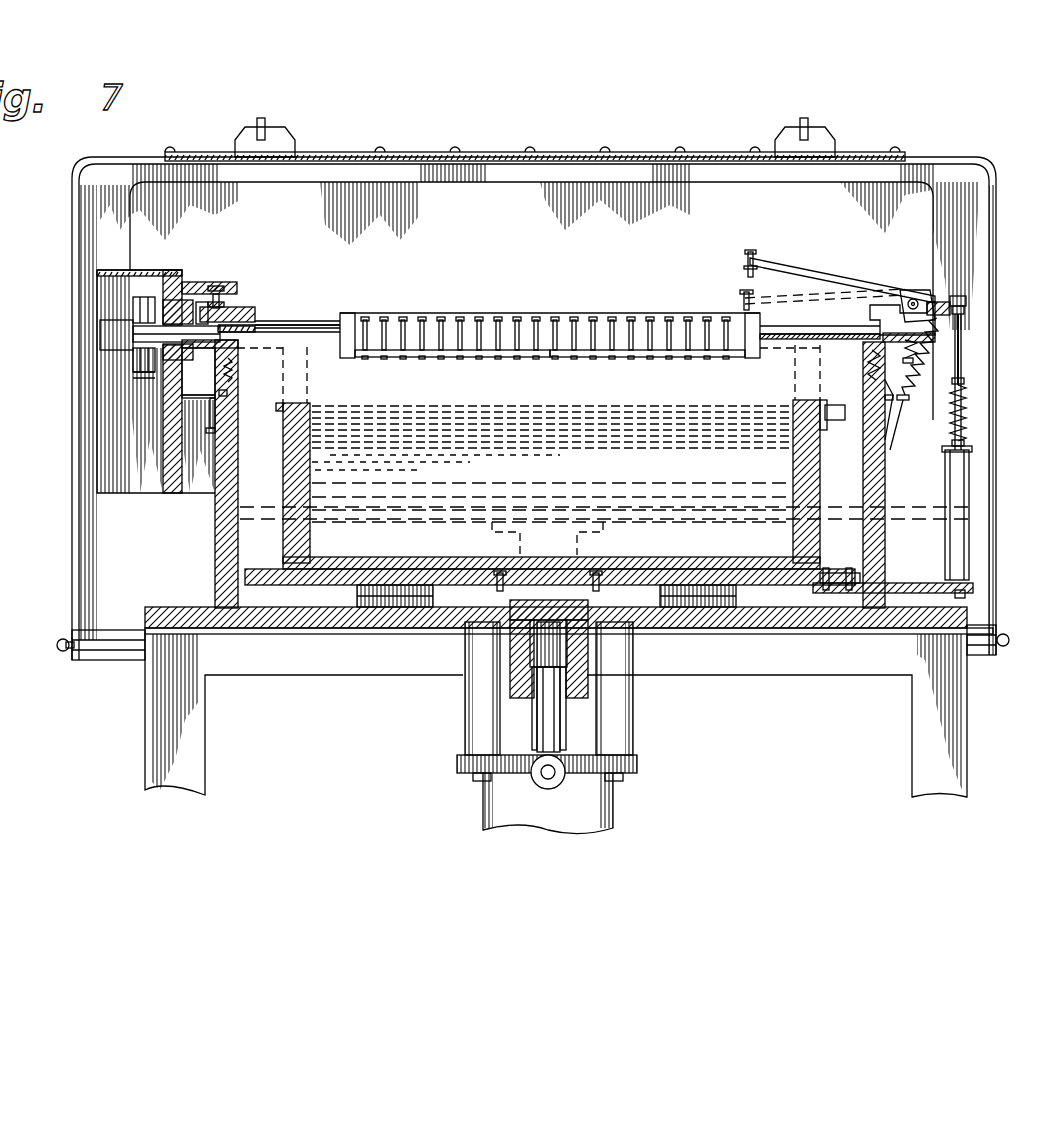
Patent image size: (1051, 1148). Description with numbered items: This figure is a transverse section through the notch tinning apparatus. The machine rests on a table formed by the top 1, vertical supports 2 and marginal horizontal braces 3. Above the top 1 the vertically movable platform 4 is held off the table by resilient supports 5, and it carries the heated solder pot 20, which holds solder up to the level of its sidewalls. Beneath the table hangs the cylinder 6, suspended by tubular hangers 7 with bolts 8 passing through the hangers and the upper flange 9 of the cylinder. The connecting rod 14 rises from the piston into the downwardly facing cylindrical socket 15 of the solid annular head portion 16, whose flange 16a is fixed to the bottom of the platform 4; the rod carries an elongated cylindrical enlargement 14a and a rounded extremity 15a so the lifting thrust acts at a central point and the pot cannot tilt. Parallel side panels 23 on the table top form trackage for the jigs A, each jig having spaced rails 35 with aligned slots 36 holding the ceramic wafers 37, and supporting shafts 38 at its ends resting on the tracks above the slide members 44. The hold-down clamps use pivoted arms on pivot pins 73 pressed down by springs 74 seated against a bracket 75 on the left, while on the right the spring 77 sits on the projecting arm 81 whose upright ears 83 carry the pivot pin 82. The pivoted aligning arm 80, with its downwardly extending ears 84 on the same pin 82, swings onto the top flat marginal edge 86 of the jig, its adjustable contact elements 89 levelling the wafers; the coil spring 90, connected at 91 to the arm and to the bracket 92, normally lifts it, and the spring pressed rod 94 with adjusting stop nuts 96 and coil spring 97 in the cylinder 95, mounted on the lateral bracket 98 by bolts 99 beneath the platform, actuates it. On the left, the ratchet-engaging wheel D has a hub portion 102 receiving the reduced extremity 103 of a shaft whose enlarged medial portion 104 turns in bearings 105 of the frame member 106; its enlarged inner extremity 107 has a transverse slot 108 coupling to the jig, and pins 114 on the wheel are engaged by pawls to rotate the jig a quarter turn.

The table top 1 is at (160, 607).
The vertical supports 2 is at (150, 734).
The marginal horizontal braces 3 is at (145, 665).
The vertically movable platform 4 is at (320, 585).
The resilient supports 5 is at (380, 607).
The cylinder 6 is at (613, 812).
The tubular hangers 7 is at (470, 741).
The bolts 8 is at (473, 778).
The upper flange 9 is at (637, 764).
The connecting rod 14 is at (545, 708).
The elongated cylindrical enlargement 14a is at (560, 645).
The cylindrical socket 15 is at (532, 670).
The rounded extremity 15a is at (599, 585).
The annular head portion 16 is at (455, 640).
The flange 16a is at (497, 585).
The heated solder pot 20 is at (300, 403).
The side panels 23 is at (215, 524).
The rails 35 is at (592, 313).
The slots 36 is at (658, 313).
The ceramic wafers 37 is at (538, 325).
The supporting shafts 38 is at (335, 320).
The slide members 44 is at (238, 344).
The pivot pins 73 is at (200, 282).
The springs 74 is at (220, 286).
The bracket 75 is at (185, 280).
The spring 77 is at (962, 325).
The pivoted aligning arm 80 is at (820, 257).
The projecting arm 81 is at (962, 345).
The pivot pin 82 is at (912, 299).
The upright ears 83 is at (940, 302).
The downwardly extending ears 84 is at (905, 290).
The top flat marginal edge 86 is at (752, 300).
The adjustable contact elements 89 is at (748, 262).
The coil spring 90 is at (920, 365).
The spring connection 91 is at (960, 296).
The bracket 92 is at (892, 450).
The spring pressed rod 94 is at (966, 410).
The cylinder 95 is at (969, 495).
The adjusting stop nuts 96 is at (968, 395).
The coil spring 97 is at (966, 430).
The lateral bracket 98 is at (973, 590).
The bolts 99 is at (860, 578).
The hub portion 102 is at (163, 350).
The reduced extremity 103 is at (135, 334).
The enlarged medial portion 104 is at (133, 378).
The bearings 105 is at (180, 300).
The frame member 106 is at (163, 476).
The enlarged inner extremity 107 is at (258, 321).
The transverse slot 108 is at (275, 332).
The pins 114 is at (135, 305).
The jigs A is at (550, 327).
The ratchet-engaging wheel D is at (100, 330).